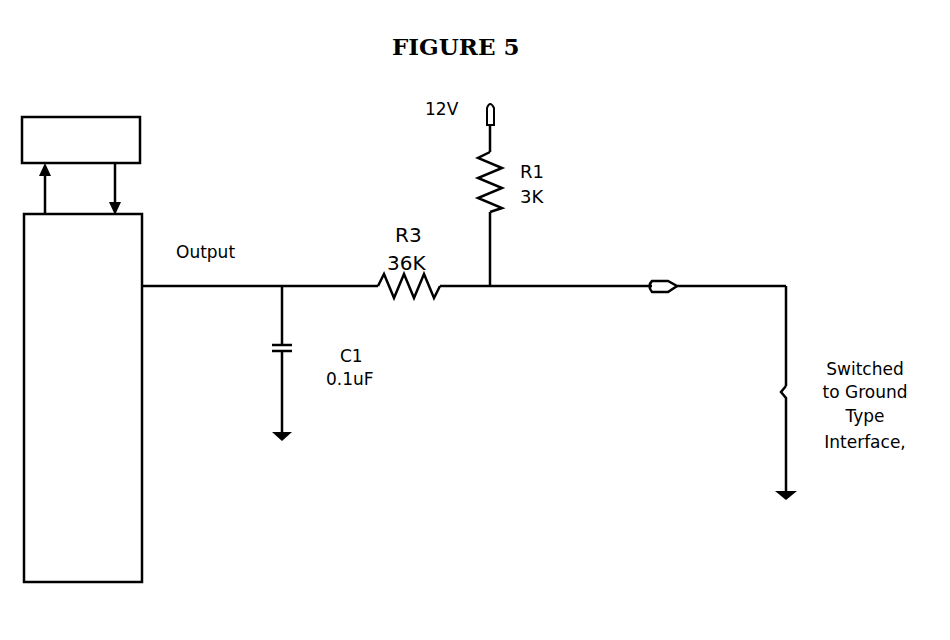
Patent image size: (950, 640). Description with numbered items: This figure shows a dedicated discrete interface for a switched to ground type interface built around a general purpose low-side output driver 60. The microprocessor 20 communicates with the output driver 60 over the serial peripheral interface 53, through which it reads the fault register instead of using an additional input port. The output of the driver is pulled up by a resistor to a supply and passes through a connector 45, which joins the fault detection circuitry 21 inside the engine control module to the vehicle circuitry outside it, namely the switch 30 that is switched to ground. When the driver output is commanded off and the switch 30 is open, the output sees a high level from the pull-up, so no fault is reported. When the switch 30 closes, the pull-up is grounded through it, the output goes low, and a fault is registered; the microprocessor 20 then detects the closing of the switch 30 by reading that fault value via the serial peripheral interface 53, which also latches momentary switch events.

The microprocessor 20 is at (112, 150).
The serial peripheral interface (SPI) 53 is at (120, 183).
The output driver 60 is at (92, 298).
The fault detection circuitry 21 is at (601, 122).
The connector 45 is at (656, 272).
The switch 30 is at (758, 390).